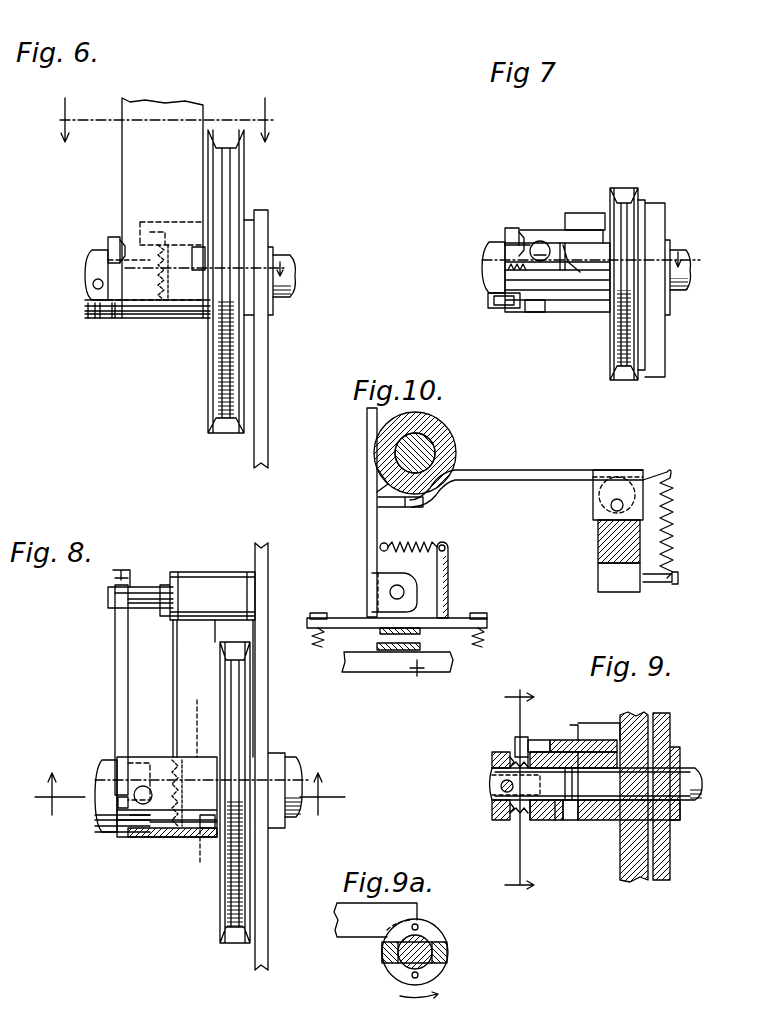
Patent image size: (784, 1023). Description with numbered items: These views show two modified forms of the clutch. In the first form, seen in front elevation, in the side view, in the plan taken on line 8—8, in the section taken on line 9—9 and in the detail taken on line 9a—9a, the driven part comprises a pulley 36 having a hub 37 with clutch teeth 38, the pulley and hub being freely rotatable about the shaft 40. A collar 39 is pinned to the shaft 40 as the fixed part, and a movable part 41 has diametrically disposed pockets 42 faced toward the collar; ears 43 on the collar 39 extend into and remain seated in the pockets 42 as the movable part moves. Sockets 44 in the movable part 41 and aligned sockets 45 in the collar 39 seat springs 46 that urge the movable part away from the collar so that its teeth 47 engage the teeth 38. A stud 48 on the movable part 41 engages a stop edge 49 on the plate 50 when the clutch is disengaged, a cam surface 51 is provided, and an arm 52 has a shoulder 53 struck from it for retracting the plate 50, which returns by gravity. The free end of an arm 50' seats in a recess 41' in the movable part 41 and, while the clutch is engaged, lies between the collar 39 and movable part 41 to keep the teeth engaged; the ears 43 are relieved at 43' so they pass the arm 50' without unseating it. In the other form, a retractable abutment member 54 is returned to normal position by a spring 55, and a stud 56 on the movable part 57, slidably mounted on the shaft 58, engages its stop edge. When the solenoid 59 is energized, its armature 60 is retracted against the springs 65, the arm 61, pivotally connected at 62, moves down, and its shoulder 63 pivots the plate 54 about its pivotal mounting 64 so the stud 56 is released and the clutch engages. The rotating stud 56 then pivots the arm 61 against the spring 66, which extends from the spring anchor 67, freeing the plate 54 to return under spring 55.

In FIG. 6, the section line 8— 8 is at (153, 120).
In FIG. 8, the section line 9— 9 is at (181, 794).
In FIG. 9, the section line 9a— 9a is at (483, 778).
In FIG. 6, the pulley 36 is at (210, 411).
In FIG. 7, the pulley 36 is at (620, 373).
In FIG. 8, the pulley 36 is at (222, 910).
In FIG. 9, the pulley 36 is at (628, 718).
In FIG. 6, the hub 37 is at (210, 318).
In FIG. 7, the hub 37 is at (602, 313).
In FIG. 8, the hub 37 is at (234, 756).
In FIG. 9, the hub 37 is at (612, 822).
In FIG. 6, the clutch teeth 38 is at (168, 320).
In FIG. 7, the clutch teeth 38 is at (568, 255).
In FIG. 8, the clutch teeth 38 is at (182, 803).
In FIG. 9, the clutch teeth 38 is at (578, 822).
In FIG. 6, the collar 39 is at (88, 262).
In FIG. 7, the collar 39 is at (488, 253).
In FIG. 8, the collar 39 is at (108, 760).
In FIG. 9, the collar 39 is at (494, 758).
In FIG. 6, the shaft 40 is at (283, 265).
In FIG. 7, the shaft 40 is at (683, 260).
In FIG. 8, the shaft 40 is at (298, 772).
In FIG. 9, the shaft 40 is at (694, 770).
In FIG. 9A, the shaft 40 is at (420, 940).
In FIG. 6, the movable part 41 is at (69, 331).
In FIG. 7, the movable part 41 is at (549, 331).
In FIG. 8, the movable part 41 is at (128, 847).
In FIG. 9, the movable part 41 is at (549, 840).
In FIG. 9A, the movable part 41 is at (433, 958).
In FIG. 6, the recess 41' is at (56, 289).
In FIG. 7, the recess 41' is at (579, 257).
In FIG. 8, the recess 41' is at (101, 816).
In FIG. 9, the recess 41' is at (561, 775).
In FIG. 9A, the recess 41' is at (440, 910).
In FIG. 6, the pockets 42 is at (120, 318).
In FIG. 7, the pockets 42 is at (537, 313).
In FIG. 9, the pockets 42 is at (605, 786).
In FIG. 9A, the pockets 42 is at (447, 945).
In FIG. 6, the ears 43 is at (58, 324).
In FIG. 7, the ears 43 is at (504, 317).
In FIG. 9, the ears 43 is at (490, 786).
In FIG. 9A, the ears 43 is at (441, 952).
In FIG. 9A, the relieved portion of ears 43' is at (359, 969).
In FIG. 9, the sockets 44 is at (541, 822).
In FIG. 9, the sockets 45 is at (505, 822).
In FIG. 6, the springs 46 is at (112, 305).
In FIG. 7, the springs 46 is at (508, 268).
In FIG. 9, the springs 46 is at (522, 822).
In FIG. 6, the teeth 47 is at (163, 318).
In FIG. 7, the teeth 47 is at (547, 241).
In FIG. 8, the teeth 47 is at (155, 838).
In FIG. 9, the teeth 47 is at (570, 822).
In FIG. 6, the stud 48 is at (124, 236).
In FIG. 7, the stud 48 is at (522, 244).
In FIG. 8, the stud 48 is at (140, 802).
In FIG. 9, the stud 48 is at (540, 745).
In FIG. 8, the stop edge 49 is at (157, 838).
In FIG. 6, the plate 50 is at (155, 248).
In FIG. 7, the plate 50 is at (561, 212).
In FIG. 8, the plate 50 is at (181, 664).
In FIG. 9, the plate 50 is at (580, 725).
In FIG. 6, the arm 50' is at (69, 243).
In FIG. 7, the arm 50' is at (483, 222).
In FIG. 8, the arm 50' is at (76, 682).
In FIG. 9, the arm 50' is at (504, 740).
In FIG. 9A, the arm 50' is at (367, 934).
In FIG. 8, the cam surface 51 is at (166, 744).
In FIG. 6, the arm 52 is at (128, 164).
In FIG. 8, the arm 52 is at (185, 838).
In FIG. 6, the shoulder 53 is at (194, 300).
In FIG. 8, the shoulder 53 is at (199, 850).
In FIG. 10, the retractable abutment member 54 is at (540, 470).
In FIG. 10, the spring 55 is at (680, 521).
In FIG. 10, the stud 56 is at (424, 507).
In FIG. 10, the movable part 57 is at (454, 464).
In FIG. 10, the shaft 58 is at (438, 427).
In FIG. 10, the solenoid 59 is at (397, 677).
In FIG. 10, the armature 60 is at (388, 632).
In FIG. 10, the arm 61 is at (367, 534).
In FIG. 10, the pivotal connection 62 is at (390, 592).
In FIG. 10, the shoulder 63 is at (372, 490).
In FIG. 10, the pivotal mounting 64 is at (611, 506).
In FIG. 10, the springs 65 is at (488, 641).
In FIG. 10, the spring 66 is at (419, 547).
In FIG. 10, the spring anchor 67 is at (449, 582).